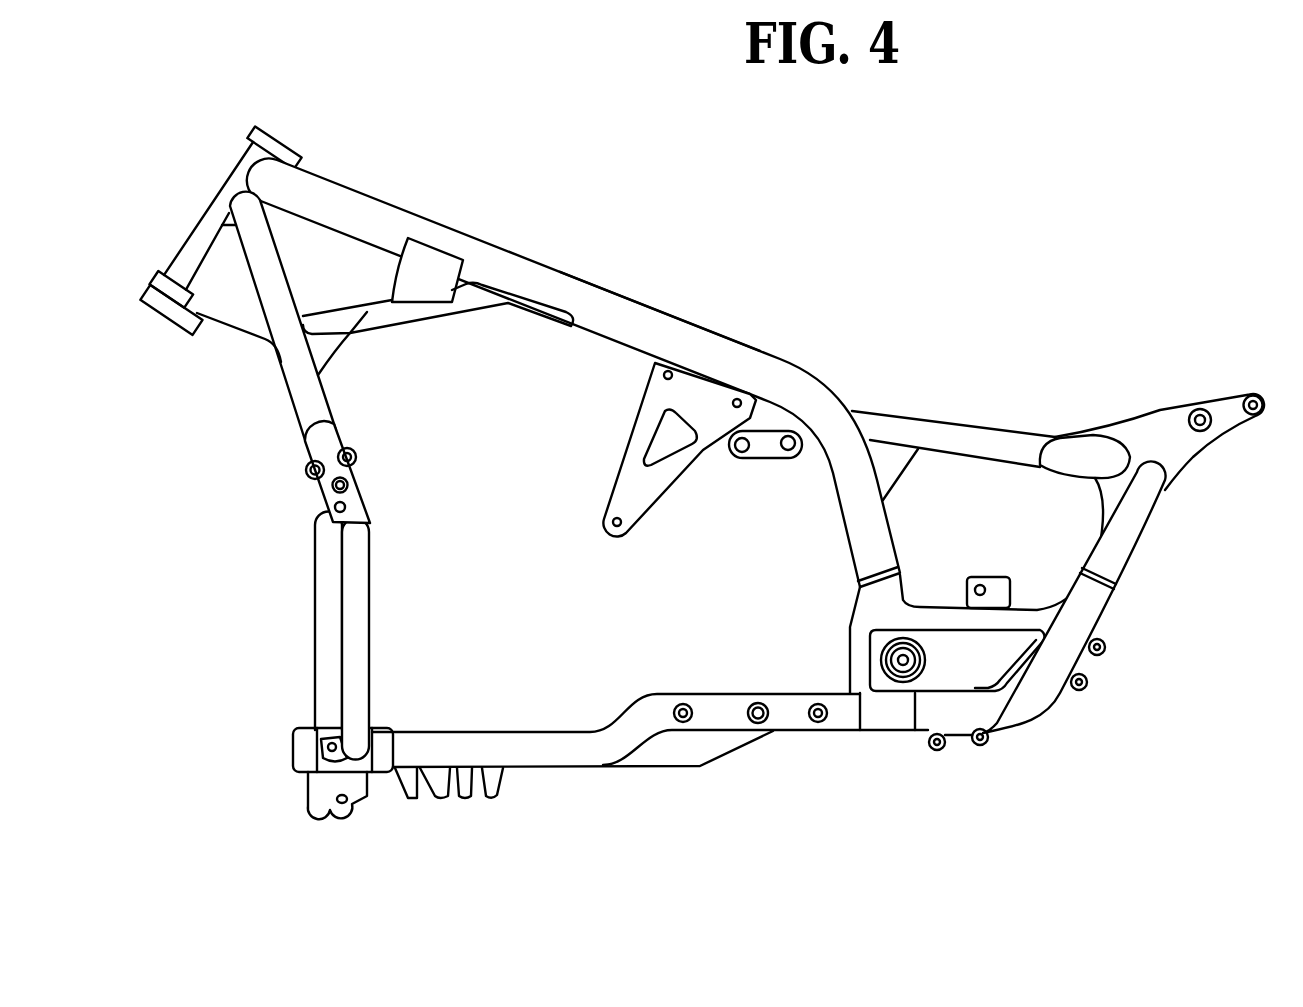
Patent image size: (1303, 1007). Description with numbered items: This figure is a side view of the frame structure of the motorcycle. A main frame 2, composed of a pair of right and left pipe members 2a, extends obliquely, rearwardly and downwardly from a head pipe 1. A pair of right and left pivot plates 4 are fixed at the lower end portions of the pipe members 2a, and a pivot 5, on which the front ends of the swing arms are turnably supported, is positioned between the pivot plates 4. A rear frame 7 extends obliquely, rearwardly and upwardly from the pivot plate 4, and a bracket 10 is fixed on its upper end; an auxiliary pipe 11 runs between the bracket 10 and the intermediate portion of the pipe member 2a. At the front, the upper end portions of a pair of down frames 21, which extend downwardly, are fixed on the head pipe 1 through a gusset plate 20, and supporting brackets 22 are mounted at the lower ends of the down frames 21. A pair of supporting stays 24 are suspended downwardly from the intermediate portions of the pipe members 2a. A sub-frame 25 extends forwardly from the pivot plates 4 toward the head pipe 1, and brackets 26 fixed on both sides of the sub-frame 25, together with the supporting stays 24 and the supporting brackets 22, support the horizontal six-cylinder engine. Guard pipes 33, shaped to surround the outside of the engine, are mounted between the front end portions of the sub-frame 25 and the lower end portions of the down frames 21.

The head pipe 1 is at (223, 188).
The main frame 2 is at (391, 203).
The pipe member 2a is at (594, 290).
The pivot plate 4 is at (905, 600).
The pivot 5 is at (908, 660).
The rear frame 7 is at (1140, 523).
The bracket 10 is at (1165, 425).
The auxiliary pipe 11 is at (987, 435).
The gusset plate 20 is at (237, 311).
The down frame 21 is at (292, 405).
The supporting bracket 22 is at (352, 476).
The supporting stay 24 is at (668, 472).
The sub-frame 25 is at (470, 740).
The bracket 26 is at (410, 790).
The guard pipe 33 is at (322, 603).